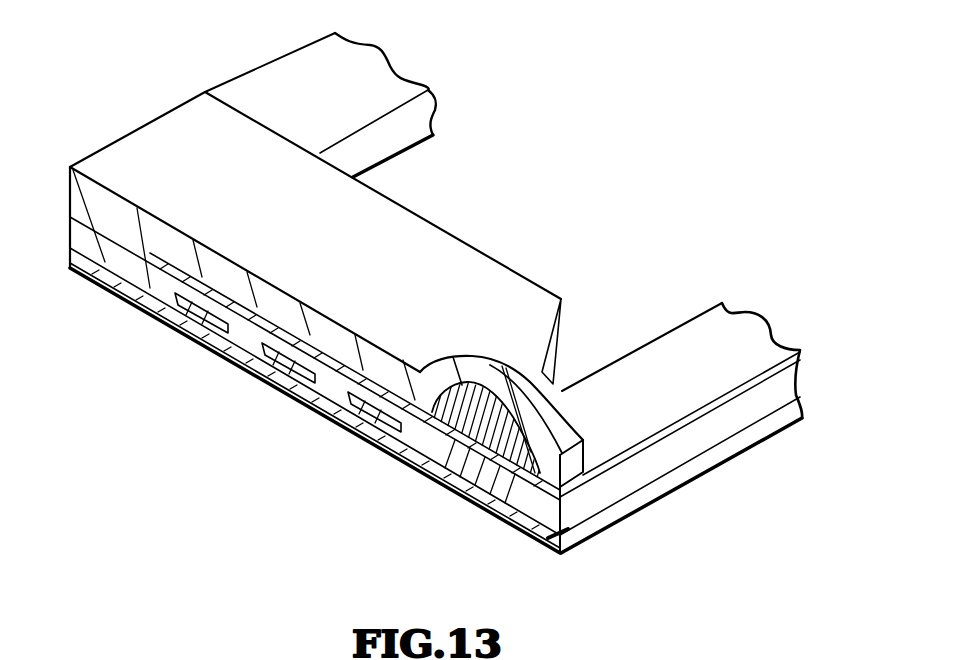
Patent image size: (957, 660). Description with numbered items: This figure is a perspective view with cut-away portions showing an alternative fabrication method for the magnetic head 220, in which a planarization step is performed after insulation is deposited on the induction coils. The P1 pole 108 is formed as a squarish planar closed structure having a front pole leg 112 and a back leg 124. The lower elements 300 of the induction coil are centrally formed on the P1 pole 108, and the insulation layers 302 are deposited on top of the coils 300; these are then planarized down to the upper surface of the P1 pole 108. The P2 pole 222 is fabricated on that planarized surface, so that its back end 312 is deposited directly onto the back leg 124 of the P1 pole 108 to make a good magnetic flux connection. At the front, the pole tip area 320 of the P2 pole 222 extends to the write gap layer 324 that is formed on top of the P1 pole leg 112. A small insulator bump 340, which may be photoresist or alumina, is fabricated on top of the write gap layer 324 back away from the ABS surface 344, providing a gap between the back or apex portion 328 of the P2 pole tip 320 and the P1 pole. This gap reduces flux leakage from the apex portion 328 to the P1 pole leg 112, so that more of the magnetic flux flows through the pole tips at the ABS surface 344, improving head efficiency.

The P1 pole 108 is at (443, 103).
The front pole leg 112 is at (527, 500).
The back leg 124 is at (260, 100).
The magnetic head 220 is at (675, 76).
The P2 pole 222 is at (481, 271).
The lower elements of the induction coil 300 is at (193, 322).
The insulation layers 302 is at (252, 332).
The back end of the P2 pole 312 is at (127, 145).
The pole tip area 320 is at (559, 422).
The write gap layer 324 is at (628, 453).
The apex portion 328 is at (533, 436).
The insulator bump 340 is at (481, 423).
The ABS surface 344 is at (593, 497).